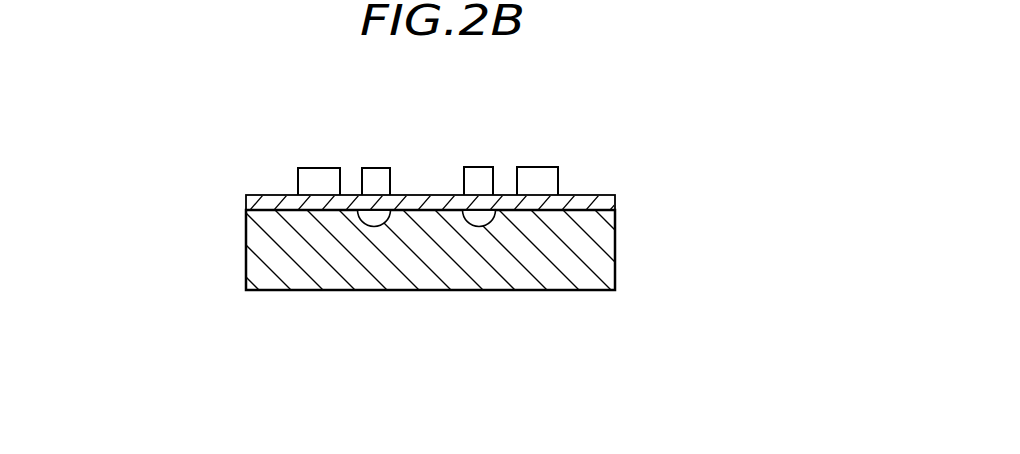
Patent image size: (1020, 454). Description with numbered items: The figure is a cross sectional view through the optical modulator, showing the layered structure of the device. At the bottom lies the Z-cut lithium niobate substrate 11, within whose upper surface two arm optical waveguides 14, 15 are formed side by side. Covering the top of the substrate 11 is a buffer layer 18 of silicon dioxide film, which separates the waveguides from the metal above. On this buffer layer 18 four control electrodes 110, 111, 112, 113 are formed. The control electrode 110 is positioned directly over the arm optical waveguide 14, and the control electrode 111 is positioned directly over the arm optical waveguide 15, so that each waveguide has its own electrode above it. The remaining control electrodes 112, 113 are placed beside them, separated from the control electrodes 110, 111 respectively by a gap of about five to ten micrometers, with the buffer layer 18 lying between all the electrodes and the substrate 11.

The substrate 11 is at (273, 292).
The arm optical waveguide 14 is at (487, 230).
The arm optical waveguide 15 is at (377, 228).
The buffer layer 18 is at (615, 200).
The control electrode 110 is at (480, 173).
The control electrode 111 is at (372, 175).
The control electrode 112 is at (547, 179).
The control electrode 113 is at (310, 182).